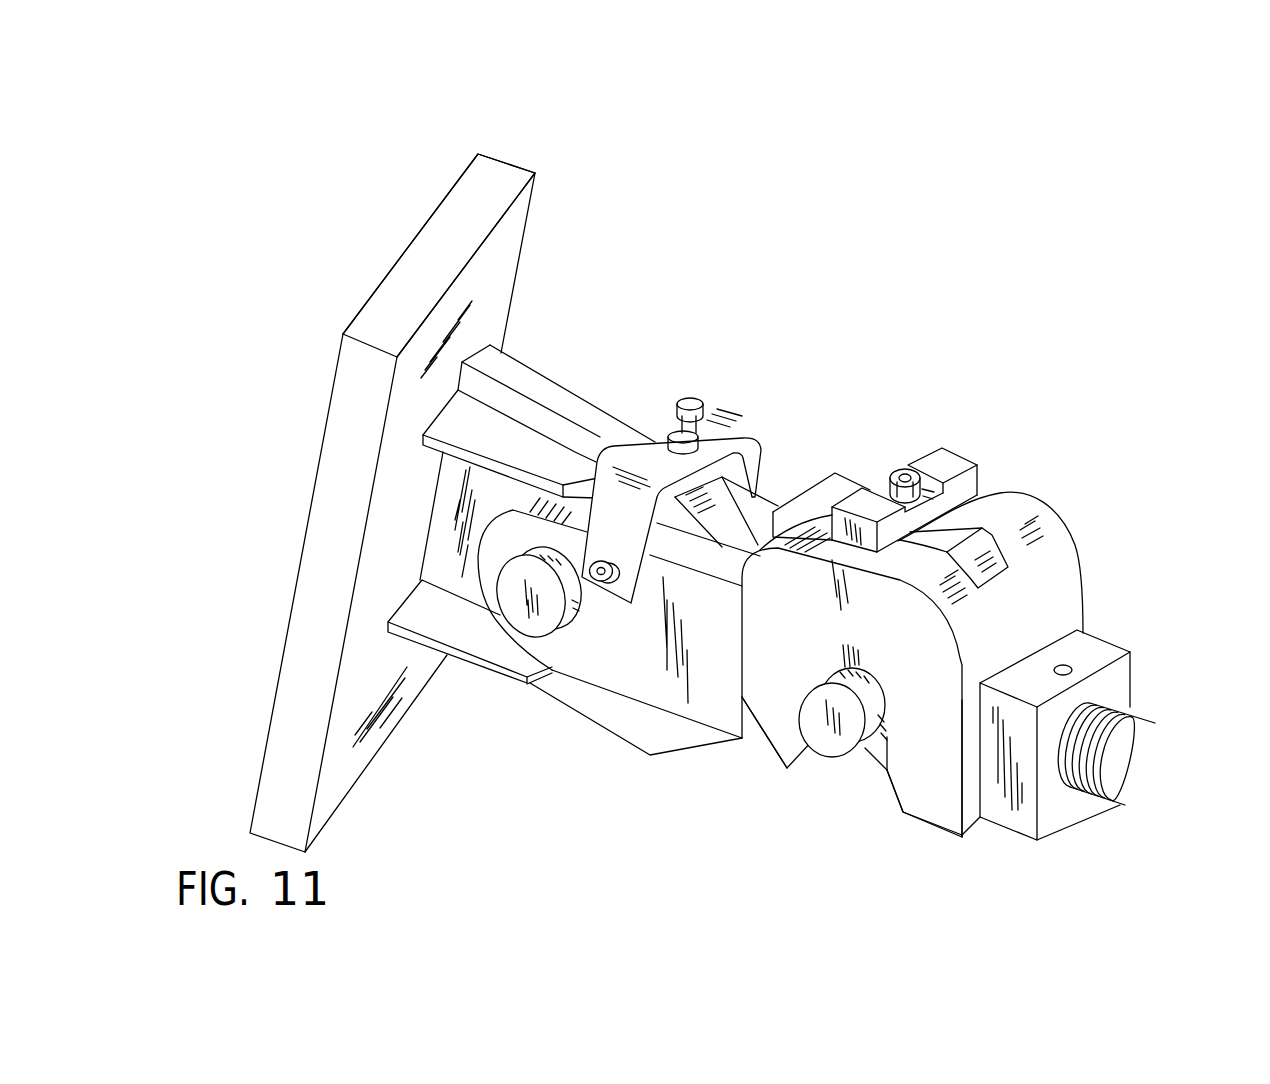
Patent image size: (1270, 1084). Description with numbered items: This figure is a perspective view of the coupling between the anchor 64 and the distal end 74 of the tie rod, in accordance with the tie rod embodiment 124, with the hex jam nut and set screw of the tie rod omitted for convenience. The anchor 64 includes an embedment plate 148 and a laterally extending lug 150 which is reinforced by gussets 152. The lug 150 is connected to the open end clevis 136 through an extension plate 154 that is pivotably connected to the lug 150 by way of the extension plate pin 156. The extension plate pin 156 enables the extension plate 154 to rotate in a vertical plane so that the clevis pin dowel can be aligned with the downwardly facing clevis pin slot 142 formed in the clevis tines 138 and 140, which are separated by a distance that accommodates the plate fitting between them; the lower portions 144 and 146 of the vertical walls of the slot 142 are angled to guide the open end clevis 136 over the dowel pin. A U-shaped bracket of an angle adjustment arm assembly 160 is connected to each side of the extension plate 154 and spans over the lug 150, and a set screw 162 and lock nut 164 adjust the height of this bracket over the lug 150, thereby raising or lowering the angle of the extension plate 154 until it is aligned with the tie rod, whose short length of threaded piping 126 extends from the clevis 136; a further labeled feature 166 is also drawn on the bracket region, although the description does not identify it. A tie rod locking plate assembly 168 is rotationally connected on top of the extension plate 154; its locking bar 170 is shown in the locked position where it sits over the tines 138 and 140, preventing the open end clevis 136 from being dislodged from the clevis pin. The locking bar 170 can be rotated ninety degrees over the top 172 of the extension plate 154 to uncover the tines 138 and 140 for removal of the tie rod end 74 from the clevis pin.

The anchor 64 is at (553, 154).
The distal end of the tie rod 74 is at (1138, 596).
The tie rod embodiment 124 is at (1050, 413).
The short length of threaded piping 126 is at (1135, 716).
The open end clevis 136 is at (950, 835).
The fork tine 138 is at (1047, 536).
The fork tine 140 is at (880, 641).
The downwardly facing slot 142 is at (863, 763).
The lower portion of the slot vertical wall 144 is at (803, 770).
The lower portion of the slot vertical wall 146 is at (887, 772).
The embedment plate 148 is at (333, 453).
The laterally extending lug 150 is at (552, 368).
The gussets 152 is at (498, 430).
The extension plate 154 is at (677, 693).
The extension plate pin 156 is at (548, 615).
The angle adjustment arm assembly 160 is at (731, 407).
The set screw 162 is at (688, 402).
The lock nut 164 is at (672, 437).
The clamp slot 166 is at (762, 460).
The tie rod locking plate assembly 168 is at (954, 440).
The locking bar 170 is at (980, 476).
The top of the extension plate 172 is at (843, 476).